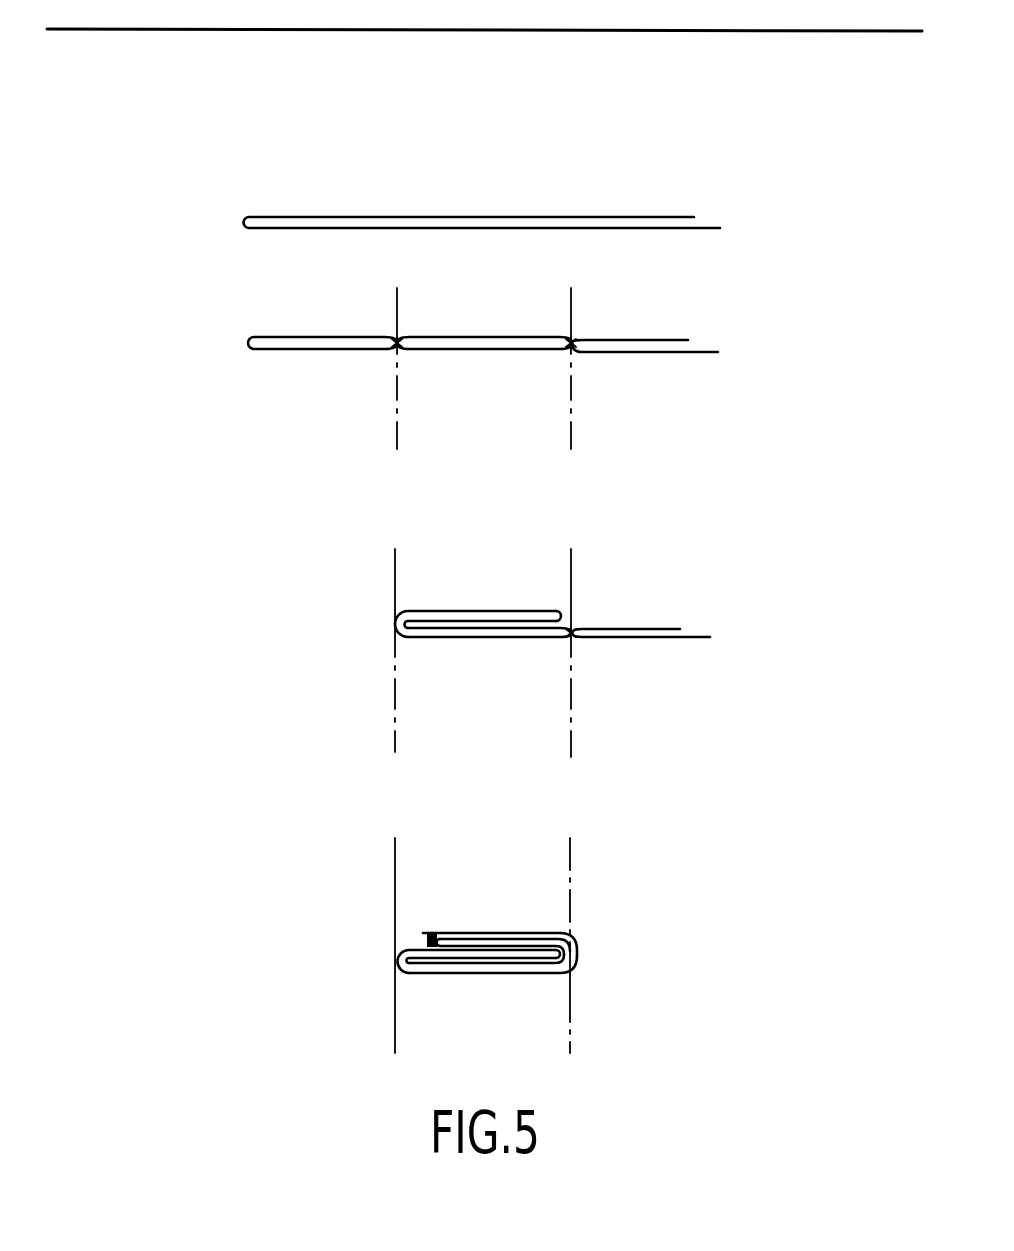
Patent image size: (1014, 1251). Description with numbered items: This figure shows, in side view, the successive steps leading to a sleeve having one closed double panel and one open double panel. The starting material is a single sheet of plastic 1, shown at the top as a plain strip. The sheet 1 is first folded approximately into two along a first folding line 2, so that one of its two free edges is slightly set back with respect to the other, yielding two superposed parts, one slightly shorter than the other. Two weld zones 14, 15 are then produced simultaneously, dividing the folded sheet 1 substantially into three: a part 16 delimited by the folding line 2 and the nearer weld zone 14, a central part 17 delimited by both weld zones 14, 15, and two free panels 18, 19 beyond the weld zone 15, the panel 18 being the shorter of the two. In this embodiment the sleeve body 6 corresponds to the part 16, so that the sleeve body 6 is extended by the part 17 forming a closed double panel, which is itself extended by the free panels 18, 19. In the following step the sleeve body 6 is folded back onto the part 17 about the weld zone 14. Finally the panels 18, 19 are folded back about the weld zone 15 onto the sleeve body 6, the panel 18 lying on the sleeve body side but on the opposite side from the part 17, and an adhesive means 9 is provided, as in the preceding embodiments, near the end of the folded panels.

The sheet 1 is at (673, 33).
The first folding line 2 is at (243, 223).
The sleeve body 6 is at (325, 345).
The adhesive means 9 is at (422, 933).
The weld zone 14 is at (400, 338).
The weld zone 15 is at (575, 338).
The part 16 is at (303, 350).
The central part 17 is at (457, 352).
The free panel 18 is at (667, 338).
The free panel 19 is at (622, 355).